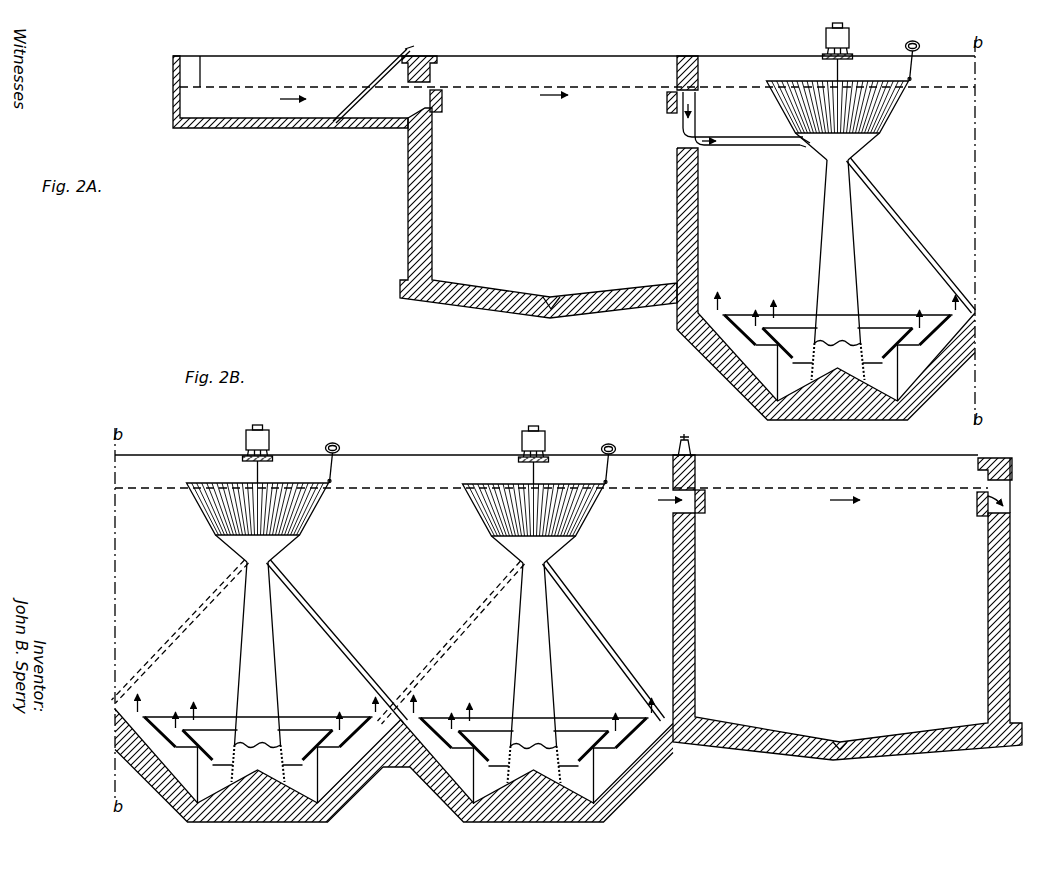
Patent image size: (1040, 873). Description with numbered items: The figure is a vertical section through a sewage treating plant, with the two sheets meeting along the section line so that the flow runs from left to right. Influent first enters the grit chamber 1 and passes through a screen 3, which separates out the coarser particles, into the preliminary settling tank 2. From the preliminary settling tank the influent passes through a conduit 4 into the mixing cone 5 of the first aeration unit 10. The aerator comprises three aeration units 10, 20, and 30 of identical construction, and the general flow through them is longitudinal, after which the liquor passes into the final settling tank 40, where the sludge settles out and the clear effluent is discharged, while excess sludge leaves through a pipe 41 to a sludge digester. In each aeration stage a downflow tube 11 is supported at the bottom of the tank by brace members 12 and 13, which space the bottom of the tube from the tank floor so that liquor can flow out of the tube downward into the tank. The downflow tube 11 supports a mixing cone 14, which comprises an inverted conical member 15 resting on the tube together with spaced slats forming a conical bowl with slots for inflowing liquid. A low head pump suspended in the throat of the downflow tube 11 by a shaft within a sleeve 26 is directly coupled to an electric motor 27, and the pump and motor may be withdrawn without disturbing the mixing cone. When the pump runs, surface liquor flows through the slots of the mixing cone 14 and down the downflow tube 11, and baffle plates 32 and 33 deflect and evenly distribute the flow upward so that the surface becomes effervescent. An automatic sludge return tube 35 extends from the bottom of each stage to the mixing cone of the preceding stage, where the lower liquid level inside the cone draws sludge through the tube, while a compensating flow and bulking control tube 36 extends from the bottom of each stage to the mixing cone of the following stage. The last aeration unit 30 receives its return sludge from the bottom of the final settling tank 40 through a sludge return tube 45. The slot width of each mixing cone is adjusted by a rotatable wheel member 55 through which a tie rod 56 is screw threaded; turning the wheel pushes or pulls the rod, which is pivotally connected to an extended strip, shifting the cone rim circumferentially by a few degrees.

In FIG. 2A, the grit chamber 1 is at (272, 124).
In FIG. 2A, the preliminary settling tank 2 is at (432, 191).
In FIG. 2A, the screen 3 is at (362, 106).
In FIG. 2A, the conduit 4 is at (742, 140).
In FIG. 2A, the mixing cone 5 is at (820, 148).
In FIG. 2A, the aeration unit 10 is at (748, 57).
In FIG. 2A, the downflow tube 11 is at (848, 253).
In FIG. 2B, the downflow tube 11 is at (407, 655).
In FIG. 2A, the brace member 12 is at (790, 334).
In FIG. 2B, the brace member 12 is at (348, 739).
In FIG. 2A, the brace member 13 is at (885, 334).
In FIG. 2B, the brace member 13 is at (443, 739).
In FIG. 2A, the mixing cone 14 is at (844, 108).
In FIG. 2B, the mixing cone 14 is at (396, 511).
In FIG. 2A, the inverted conical member 15 is at (849, 146).
In FIG. 2B, the inverted conical member 15 is at (396, 549).
In FIG. 2B, the aeration unit 20 is at (186, 455).
In FIG. 2A, the sleeve 26 is at (858, 70).
In FIG. 2B, the sleeve 26 is at (396, 472).
In FIG. 2A, the electric motor 27 is at (821, 41).
In FIG. 2B, the electric motor 27 is at (381, 437).
In FIG. 2B, the aeration unit 30 is at (497, 457).
In FIG. 2A, the baffle plate 32 is at (839, 323).
In FIG. 2B, the baffle plate 32 is at (396, 728).
In FIG. 2A, the baffle plate 33 is at (838, 317).
In FIG. 2B, the baffle plate 33 is at (396, 721).
In FIG. 2A, the automatic sludge return tube 35 is at (911, 235).
In FIG. 2B, the automatic sludge return tube 35 is at (337, 641).
In FIG. 2B, the compensating flow and bulking control tube 36 is at (318, 642).
In FIG. 2B, the final settling tank 40 is at (882, 470).
In FIG. 2B, the pipe 41 is at (842, 750).
In FIG. 2B, the sludge return tube 45 is at (604, 641).
In FIG. 2A, the rotatable wheel member 55 is at (932, 37).
In FIG. 2B, the rotatable wheel member 55 is at (484, 443).
In FIG. 2A, the tie rod 56 is at (933, 61).
In FIG. 2B, the tie rod 56 is at (485, 468).